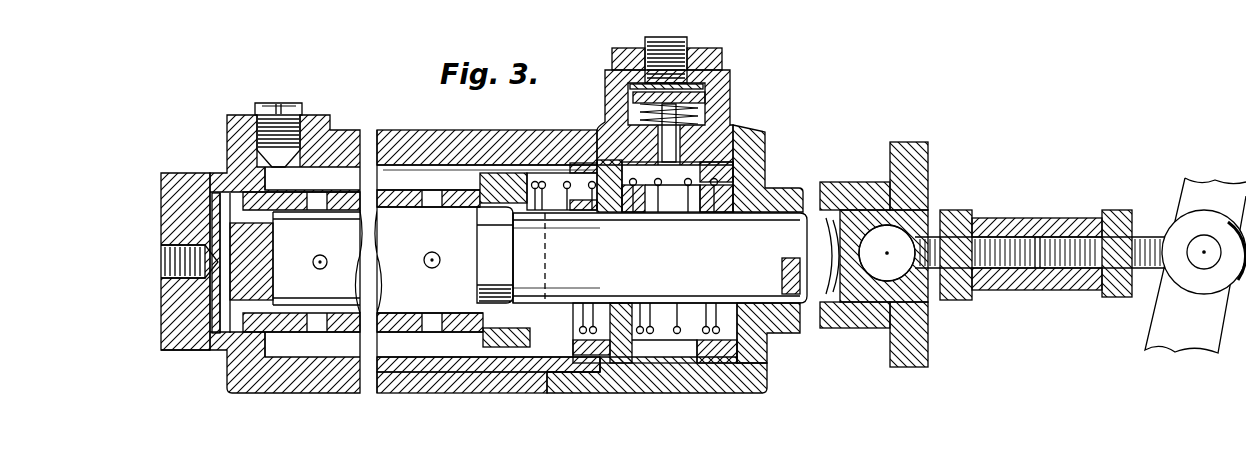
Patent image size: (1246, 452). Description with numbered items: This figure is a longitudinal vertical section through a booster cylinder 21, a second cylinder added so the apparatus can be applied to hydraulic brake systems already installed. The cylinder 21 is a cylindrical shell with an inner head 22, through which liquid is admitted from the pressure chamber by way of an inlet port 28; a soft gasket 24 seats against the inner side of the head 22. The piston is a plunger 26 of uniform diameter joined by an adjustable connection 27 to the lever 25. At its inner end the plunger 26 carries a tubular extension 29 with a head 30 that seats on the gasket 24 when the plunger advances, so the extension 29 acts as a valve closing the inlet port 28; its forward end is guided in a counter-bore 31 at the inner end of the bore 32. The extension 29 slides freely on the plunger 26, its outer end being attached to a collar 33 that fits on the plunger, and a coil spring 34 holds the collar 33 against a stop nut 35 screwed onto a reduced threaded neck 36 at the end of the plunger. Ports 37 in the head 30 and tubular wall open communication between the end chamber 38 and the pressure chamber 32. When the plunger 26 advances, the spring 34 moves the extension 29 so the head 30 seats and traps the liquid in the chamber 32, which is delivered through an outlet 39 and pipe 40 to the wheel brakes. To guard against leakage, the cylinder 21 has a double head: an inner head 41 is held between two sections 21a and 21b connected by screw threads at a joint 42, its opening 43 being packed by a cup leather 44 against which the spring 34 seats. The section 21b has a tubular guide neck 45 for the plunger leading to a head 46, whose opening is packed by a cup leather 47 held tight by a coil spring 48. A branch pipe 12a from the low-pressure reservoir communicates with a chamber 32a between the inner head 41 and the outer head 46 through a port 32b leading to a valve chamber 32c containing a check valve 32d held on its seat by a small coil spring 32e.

The branch pipe 12a is at (641, 42).
The booster cylinder 21 is at (335, 130).
The cylinder section 21a is at (554, 388).
The cylinder section 21b is at (652, 388).
The inner head 22 is at (176, 206).
The soft gasket 24 is at (172, 250).
The lever 25 is at (1200, 178).
The plunger 26 is at (660, 258).
The adjustable connection 27 is at (1020, 218).
The inlet port 28 is at (240, 262).
The tubular extension 29 is at (396, 175).
The head 30 is at (242, 288).
The counter-bore 31 is at (230, 326).
The bore 32 is at (364, 262).
The chamber 32a is at (664, 349).
The port 32b is at (642, 180).
The valve chamber 32c is at (672, 142).
The check valve 32d is at (702, 96).
The small coil spring 32e is at (690, 110).
The collar 33 is at (482, 186).
The coil spring 34 is at (581, 210).
The stop nut 35 is at (506, 258).
The reduced threaded neck 36 is at (478, 236).
The ports 37 is at (316, 206).
The end chamber 38 is at (228, 205).
The outlet 39 is at (268, 104).
The pipe 40 is at (300, 108).
The inner head 41 is at (647, 179).
The joint 42 is at (567, 147).
The opening 43 is at (606, 213).
The cup leather 44 is at (634, 282).
The tubular guide neck 45 is at (848, 186).
The head 46 is at (756, 170).
The cup leather 47 is at (718, 213).
The coil spring 48 is at (648, 213).